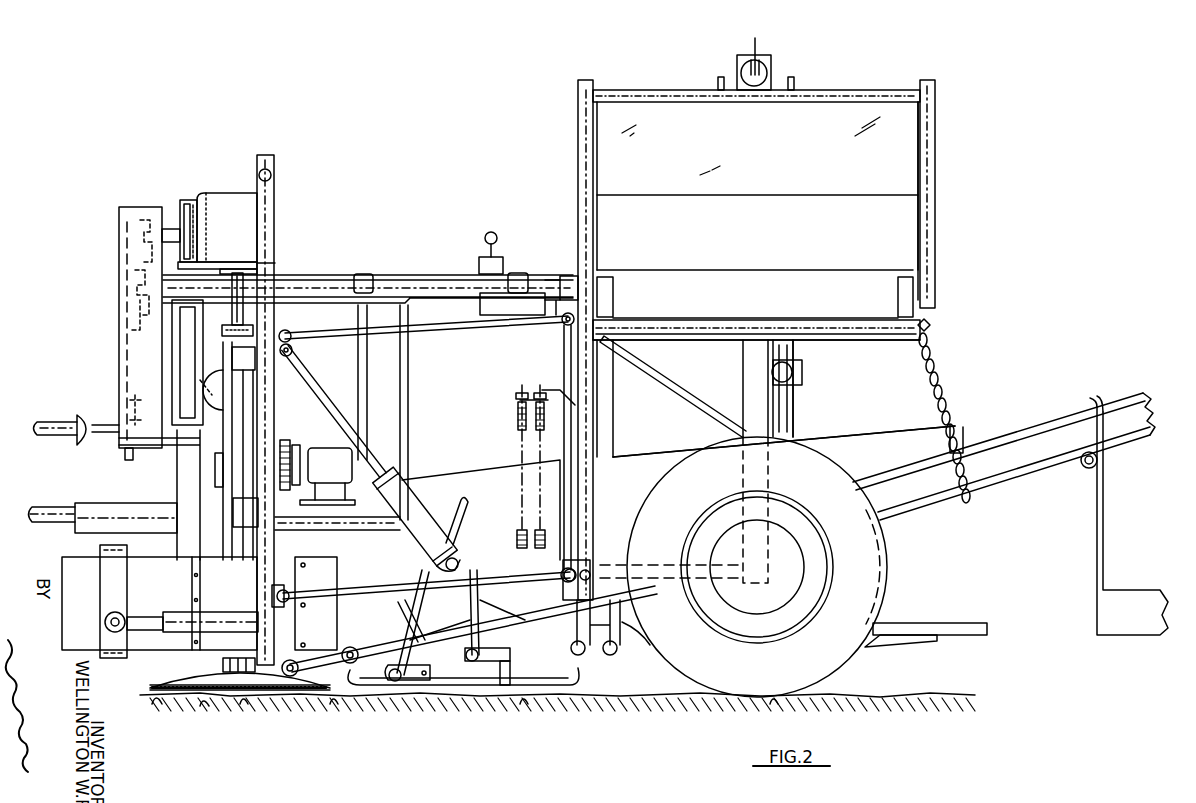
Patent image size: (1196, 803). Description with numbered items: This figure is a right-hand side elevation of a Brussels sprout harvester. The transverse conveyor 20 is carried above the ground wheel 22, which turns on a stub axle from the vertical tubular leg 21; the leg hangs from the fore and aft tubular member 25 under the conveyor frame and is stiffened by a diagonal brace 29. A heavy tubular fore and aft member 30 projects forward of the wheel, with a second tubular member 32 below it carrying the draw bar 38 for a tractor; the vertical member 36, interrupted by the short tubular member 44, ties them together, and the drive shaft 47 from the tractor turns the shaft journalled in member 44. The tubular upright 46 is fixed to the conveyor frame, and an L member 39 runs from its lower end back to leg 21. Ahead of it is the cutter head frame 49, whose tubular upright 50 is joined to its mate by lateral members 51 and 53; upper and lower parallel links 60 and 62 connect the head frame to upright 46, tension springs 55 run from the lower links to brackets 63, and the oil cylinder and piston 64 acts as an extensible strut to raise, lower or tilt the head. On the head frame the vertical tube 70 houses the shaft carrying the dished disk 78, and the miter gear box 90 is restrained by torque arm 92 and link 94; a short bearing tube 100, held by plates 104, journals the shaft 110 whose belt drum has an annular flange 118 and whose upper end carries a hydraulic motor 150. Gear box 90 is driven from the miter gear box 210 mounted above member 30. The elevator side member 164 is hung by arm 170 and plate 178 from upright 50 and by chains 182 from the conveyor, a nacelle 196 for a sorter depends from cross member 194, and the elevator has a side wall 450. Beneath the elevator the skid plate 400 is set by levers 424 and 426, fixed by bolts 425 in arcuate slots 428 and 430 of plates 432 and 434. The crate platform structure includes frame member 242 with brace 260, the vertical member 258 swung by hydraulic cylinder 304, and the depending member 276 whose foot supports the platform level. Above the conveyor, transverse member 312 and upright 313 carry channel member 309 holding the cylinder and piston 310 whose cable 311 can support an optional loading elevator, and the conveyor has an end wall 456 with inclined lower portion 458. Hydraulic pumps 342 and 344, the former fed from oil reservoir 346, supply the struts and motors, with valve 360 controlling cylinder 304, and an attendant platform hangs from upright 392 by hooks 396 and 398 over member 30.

The transverse conveyor 20 is at (880, 270).
The vertical tubular leg 21 is at (768, 405).
The ground wheel 22 is at (886, 570).
The fore and aft extending tubular member 25 is at (882, 341).
The diagonal brace 29 is at (678, 392).
The heavy tubular fore and aft extending member 30 is at (396, 275).
The second tubular member 32 is at (95, 533).
The vertical tubular member 36 is at (178, 465).
The draw bar 38 is at (50, 507).
The L member 39 is at (598, 560).
The short tubular member 44 is at (197, 433).
The tubular upright 46 is at (578, 107).
The drive shaft 47 is at (60, 422).
The cutter head frame 49 is at (283, 229).
The tubular upright 50 is at (275, 205).
The lateral member 51 is at (272, 170).
The lateral member 53 is at (292, 349).
The tension spring 55 is at (520, 410).
The upper parallel link 60 is at (443, 322).
The lower parallel link 62 is at (350, 590).
The bracket 63 is at (548, 390).
The oil cylinder and piston 64 is at (408, 497).
The vertical tube 70 is at (243, 400).
The convex or dished circular disk 78 is at (250, 690).
The miter gear box 90 is at (230, 193).
The torque arm 92 is at (190, 250).
The link 94 is at (188, 245).
The short bearing tube 100 is at (282, 542).
The plate 104 is at (233, 512).
The shaft 110 is at (285, 445).
The annular flange 118 is at (252, 558).
The hydraulic motor 150 is at (293, 403).
The elevator side member 164 is at (1020, 453).
The arm 170 is at (277, 676).
The forwardly projecting plate 178 is at (318, 680).
The chain 182 is at (938, 372).
The cross member 194 is at (1086, 470).
The nacelle 196 is at (1097, 546).
The miter gear box 210 is at (185, 205).
The platform frame member 242 is at (966, 624).
The vertical tubular member 258 is at (795, 420).
The brace member 260 is at (890, 646).
The depending tubular member 276 is at (615, 432).
The hydraulic cylinder 304 is at (804, 370).
The transverse channel member 309 is at (796, 84).
The cylinder and piston 310 is at (772, 64).
The cable 311 is at (752, 45).
The transverse member 312 is at (835, 98).
The upright 313 is at (935, 200).
The high pressure hydraulic pump 342 is at (214, 465).
The high pressure hydraulic pump 344 is at (327, 476).
The oil reservoir 346 is at (200, 380).
The valve 360 is at (487, 234).
The upright 392 is at (368, 380).
The hook 396 is at (360, 274).
The hook 398 is at (520, 273).
The skid plate 400 is at (428, 686).
The lever 424 is at (430, 640).
The bolt 425 is at (448, 655).
The lever 426 is at (508, 640).
The arcuate slot 428 is at (415, 570).
The arcuate slot 430 is at (512, 540).
The plate 432 is at (405, 612).
The plate 434 is at (470, 543).
The side wall 450 is at (878, 455).
The end wall 456 is at (796, 179).
The inclined lower portion 458 is at (807, 243).